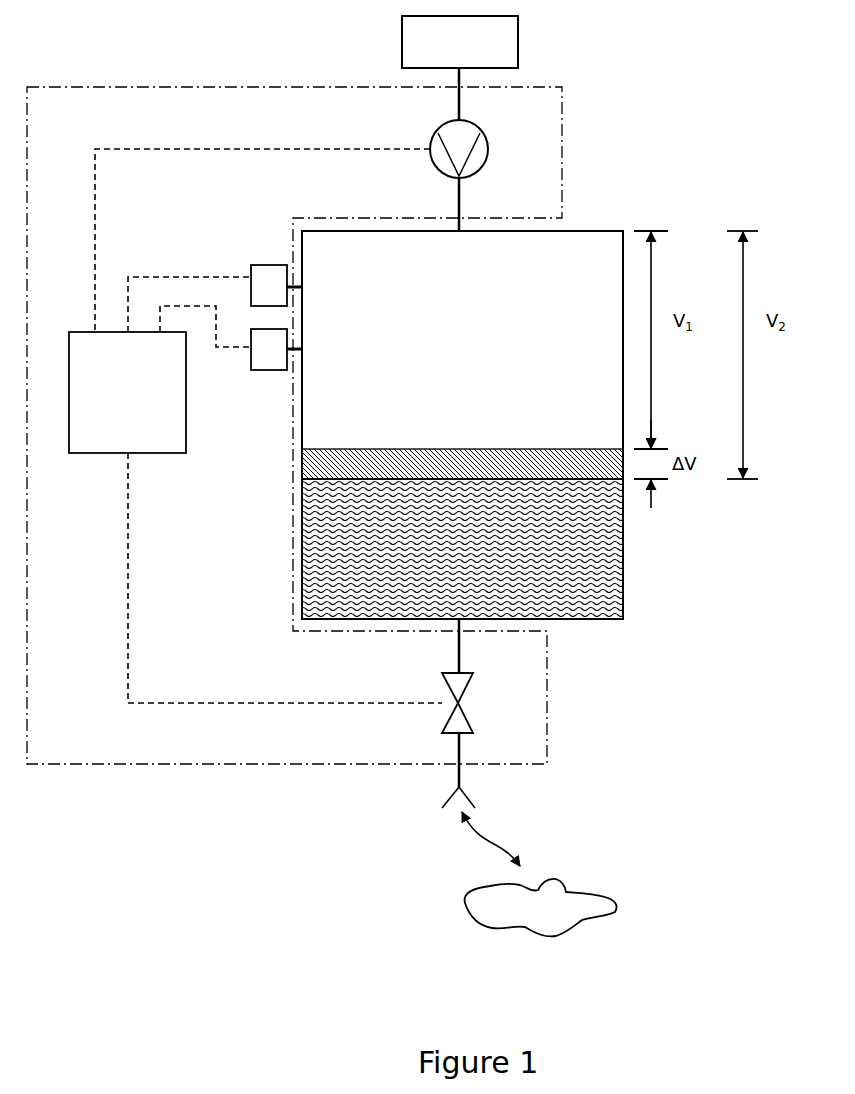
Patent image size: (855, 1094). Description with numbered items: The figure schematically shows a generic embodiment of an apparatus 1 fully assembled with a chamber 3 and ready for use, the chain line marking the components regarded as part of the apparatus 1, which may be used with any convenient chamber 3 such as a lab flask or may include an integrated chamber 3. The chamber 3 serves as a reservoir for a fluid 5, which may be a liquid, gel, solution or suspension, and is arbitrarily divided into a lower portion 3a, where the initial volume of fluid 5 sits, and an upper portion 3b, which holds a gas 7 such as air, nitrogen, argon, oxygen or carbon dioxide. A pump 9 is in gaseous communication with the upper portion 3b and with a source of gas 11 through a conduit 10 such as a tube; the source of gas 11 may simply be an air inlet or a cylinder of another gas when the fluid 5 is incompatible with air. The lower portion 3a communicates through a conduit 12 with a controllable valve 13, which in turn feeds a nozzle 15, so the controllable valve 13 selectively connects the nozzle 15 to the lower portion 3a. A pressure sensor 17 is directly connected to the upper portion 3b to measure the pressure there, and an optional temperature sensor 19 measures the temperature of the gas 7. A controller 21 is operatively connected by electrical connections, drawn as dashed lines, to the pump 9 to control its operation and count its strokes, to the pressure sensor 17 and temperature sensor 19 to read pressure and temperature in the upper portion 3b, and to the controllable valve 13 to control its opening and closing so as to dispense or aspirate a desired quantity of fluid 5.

The apparatus 1 is at (562, 97).
The chamber 3 is at (623, 533).
The lower portion 3a is at (280, 563).
The upper portion 3b is at (278, 422).
The fluid 5 is at (600, 580).
The gas 7 is at (581, 237).
The pump 9 is at (489, 155).
The conduit 10 is at (459, 212).
The source of gas 11 is at (518, 62).
The conduit 12 is at (459, 660).
The controllable valve 13 is at (475, 738).
The nozzle 15 is at (465, 793).
The pressure sensor 17 is at (270, 265).
The temperature sensor 19 is at (266, 371).
The controller 21 is at (255, 426).